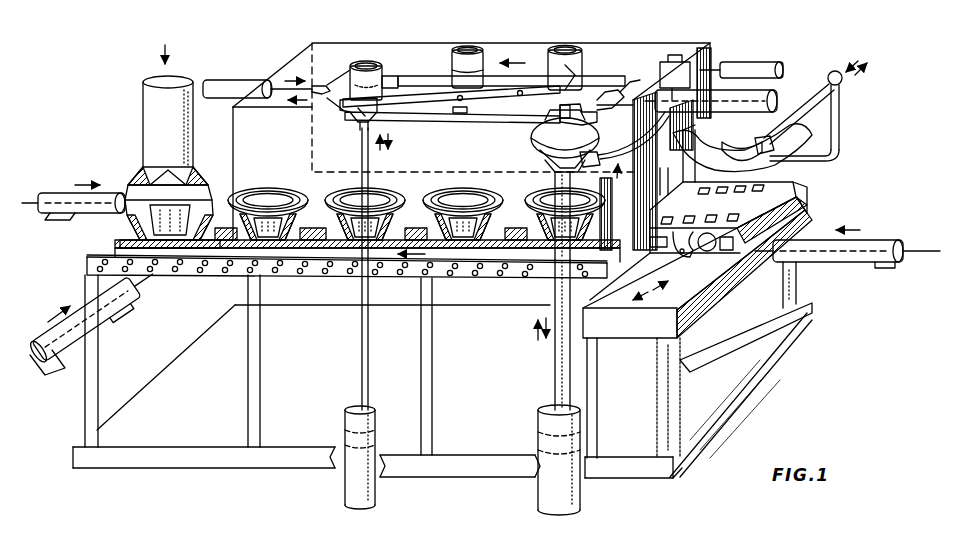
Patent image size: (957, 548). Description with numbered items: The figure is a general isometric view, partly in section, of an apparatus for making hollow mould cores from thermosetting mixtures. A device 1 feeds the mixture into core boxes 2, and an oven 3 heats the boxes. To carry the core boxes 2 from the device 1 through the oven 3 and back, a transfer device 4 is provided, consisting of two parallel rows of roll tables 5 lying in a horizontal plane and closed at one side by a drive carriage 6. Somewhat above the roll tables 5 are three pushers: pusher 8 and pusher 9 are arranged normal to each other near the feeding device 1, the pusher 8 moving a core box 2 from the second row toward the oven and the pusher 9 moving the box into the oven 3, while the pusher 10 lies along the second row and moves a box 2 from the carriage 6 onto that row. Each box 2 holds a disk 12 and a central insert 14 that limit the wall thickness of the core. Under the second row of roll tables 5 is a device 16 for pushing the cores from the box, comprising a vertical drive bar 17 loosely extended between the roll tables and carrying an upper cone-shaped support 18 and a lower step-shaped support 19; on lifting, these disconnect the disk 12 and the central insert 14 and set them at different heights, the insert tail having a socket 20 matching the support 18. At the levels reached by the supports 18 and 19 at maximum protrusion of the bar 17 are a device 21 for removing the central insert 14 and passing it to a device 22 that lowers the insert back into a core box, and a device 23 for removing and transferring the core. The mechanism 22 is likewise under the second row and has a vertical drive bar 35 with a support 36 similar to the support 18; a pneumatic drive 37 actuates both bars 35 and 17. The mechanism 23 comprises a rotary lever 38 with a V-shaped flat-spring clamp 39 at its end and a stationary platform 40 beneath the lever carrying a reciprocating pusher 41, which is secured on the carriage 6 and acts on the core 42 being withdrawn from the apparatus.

The device for feeding the mixture 1 is at (147, 123).
The core box 2 is at (238, 200).
The oven 3 is at (292, 68).
The device for transferring the core boxes 4 is at (100, 258).
The roll tables 5 is at (90, 266).
The drive carriage 6 is at (775, 188).
The pusher 8 is at (83, 312).
The pusher 9 is at (50, 192).
The pusher 10 is at (878, 242).
The disk 12 is at (125, 237).
The central insert 14 is at (133, 190).
The device for pushing the cores from the box 16 is at (548, 186).
The vertical drive bar 17 is at (557, 381).
The upper support 18 is at (592, 113).
The lower support 19 is at (550, 166).
The socket 20 is at (583, 66).
The device for removing the central insert 21 is at (410, 73).
The device lowering the central insert into the core box 22 is at (356, 181).
The device for removing and transferring the core 23 is at (614, 180).
The vertical drive bar 35 is at (366, 353).
The support 36 is at (364, 118).
The pneumatic drive 37 is at (350, 452).
The rotary lever 38 is at (580, 214).
The clamp 39 is at (591, 174).
The stationary platform 40 is at (800, 128).
The reciprocating pusher 41 is at (735, 155).
The core 42 is at (545, 139).